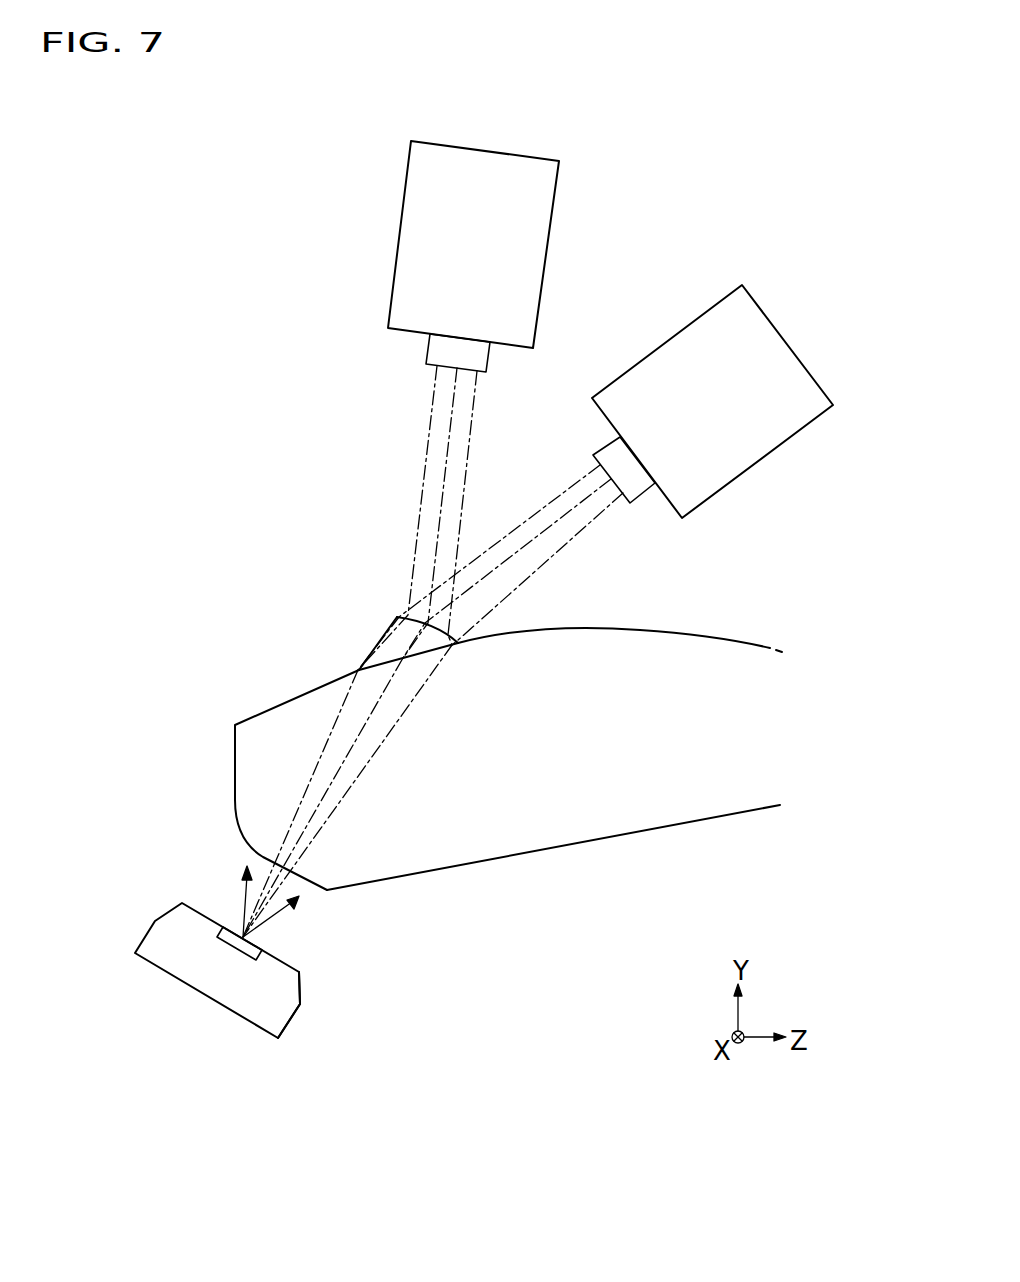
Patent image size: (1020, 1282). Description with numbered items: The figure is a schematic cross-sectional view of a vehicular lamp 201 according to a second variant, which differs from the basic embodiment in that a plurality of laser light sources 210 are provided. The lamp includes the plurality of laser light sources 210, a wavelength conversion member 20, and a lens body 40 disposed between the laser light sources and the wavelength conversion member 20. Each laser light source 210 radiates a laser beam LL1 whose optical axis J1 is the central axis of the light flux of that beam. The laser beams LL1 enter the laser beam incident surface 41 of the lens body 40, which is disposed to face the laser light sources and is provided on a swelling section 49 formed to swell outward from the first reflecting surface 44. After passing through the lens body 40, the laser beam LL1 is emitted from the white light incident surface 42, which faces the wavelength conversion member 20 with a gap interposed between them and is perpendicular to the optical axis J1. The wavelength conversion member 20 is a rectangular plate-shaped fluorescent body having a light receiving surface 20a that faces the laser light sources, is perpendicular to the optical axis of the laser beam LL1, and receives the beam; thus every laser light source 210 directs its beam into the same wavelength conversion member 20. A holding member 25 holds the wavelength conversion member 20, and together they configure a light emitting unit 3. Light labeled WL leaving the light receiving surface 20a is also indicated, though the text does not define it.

The vehicular lamp 201 is at (248, 232).
The laser light source 210 is at (560, 215).
The laser beam LL1 is at (473, 402).
The optical axis J1 is at (445, 460).
The laser beam incident surface 41 is at (396, 616).
The swelling section 49 is at (379, 641).
The first reflecting surface 44 is at (612, 636).
The lens body 40 is at (736, 642).
The white light incident surface 42 is at (258, 858).
The wavelength conversion member 20 is at (246, 952).
The light receiving surface 20a is at (227, 925).
The holding member 25 is at (300, 1013).
The light emitting unit 3 is at (318, 1103).
The reflected light / welding light WL is at (244, 908).